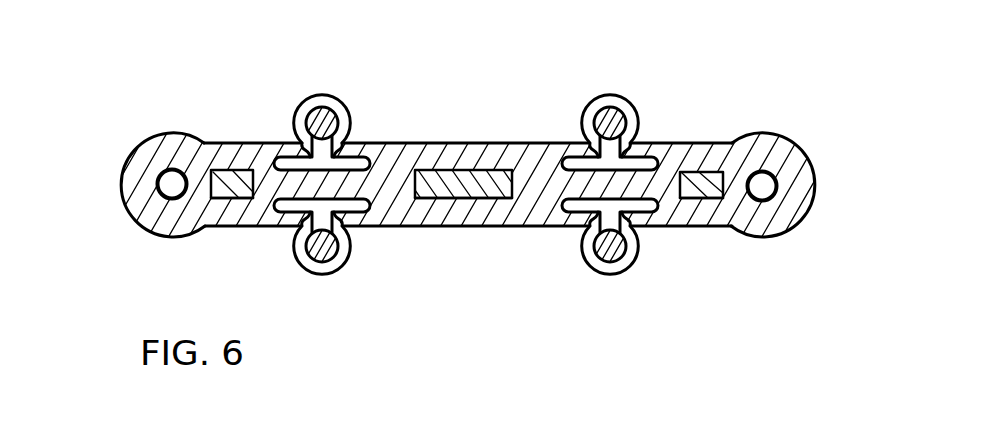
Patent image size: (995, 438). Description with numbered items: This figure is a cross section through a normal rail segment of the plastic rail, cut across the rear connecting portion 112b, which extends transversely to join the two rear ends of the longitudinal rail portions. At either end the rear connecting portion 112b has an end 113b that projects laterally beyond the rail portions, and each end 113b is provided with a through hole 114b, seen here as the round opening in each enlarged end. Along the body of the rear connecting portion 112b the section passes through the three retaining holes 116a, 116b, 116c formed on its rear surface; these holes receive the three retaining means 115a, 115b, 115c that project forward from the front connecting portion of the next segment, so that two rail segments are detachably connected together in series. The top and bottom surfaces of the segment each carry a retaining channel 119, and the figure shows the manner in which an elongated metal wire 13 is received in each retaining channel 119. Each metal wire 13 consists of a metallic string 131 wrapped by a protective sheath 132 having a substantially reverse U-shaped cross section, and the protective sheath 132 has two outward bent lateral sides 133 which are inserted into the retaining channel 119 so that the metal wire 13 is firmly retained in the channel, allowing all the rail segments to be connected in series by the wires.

The rear connecting portion 112b is at (385, 227).
The end of rear connecting portion 113b is at (148, 137).
The through hole 114b is at (160, 196).
The retaining means 115a is at (243, 198).
The retaining means 115b is at (476, 170).
The retaining means 115c is at (698, 172).
The retaining hole 116a is at (216, 199).
The retaining hole 116b is at (462, 199).
The retaining hole 116c is at (700, 199).
The retaining channel 119 is at (300, 145).
The elongated metal wire 13 is at (613, 97).
The metallic string 131 is at (320, 108).
The protective sheath 132 is at (336, 99).
The outward bent lateral sides 133 is at (298, 152).